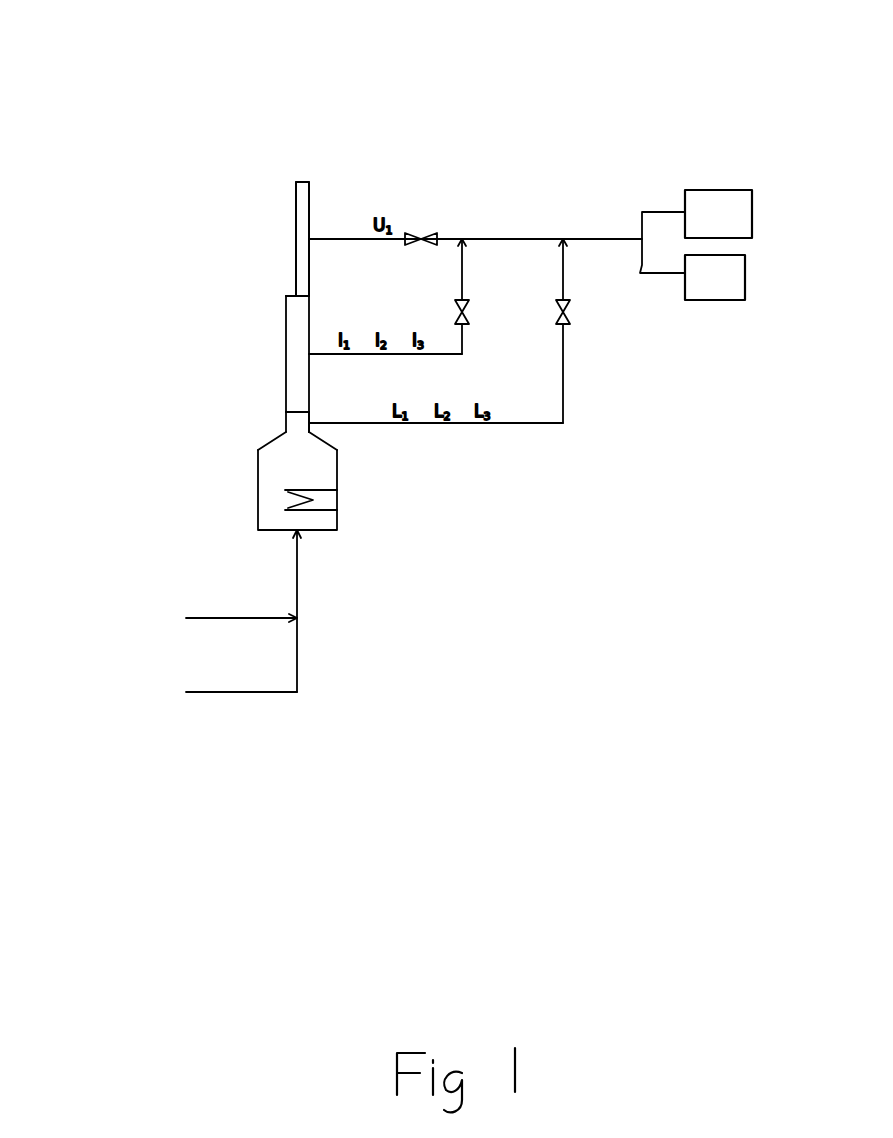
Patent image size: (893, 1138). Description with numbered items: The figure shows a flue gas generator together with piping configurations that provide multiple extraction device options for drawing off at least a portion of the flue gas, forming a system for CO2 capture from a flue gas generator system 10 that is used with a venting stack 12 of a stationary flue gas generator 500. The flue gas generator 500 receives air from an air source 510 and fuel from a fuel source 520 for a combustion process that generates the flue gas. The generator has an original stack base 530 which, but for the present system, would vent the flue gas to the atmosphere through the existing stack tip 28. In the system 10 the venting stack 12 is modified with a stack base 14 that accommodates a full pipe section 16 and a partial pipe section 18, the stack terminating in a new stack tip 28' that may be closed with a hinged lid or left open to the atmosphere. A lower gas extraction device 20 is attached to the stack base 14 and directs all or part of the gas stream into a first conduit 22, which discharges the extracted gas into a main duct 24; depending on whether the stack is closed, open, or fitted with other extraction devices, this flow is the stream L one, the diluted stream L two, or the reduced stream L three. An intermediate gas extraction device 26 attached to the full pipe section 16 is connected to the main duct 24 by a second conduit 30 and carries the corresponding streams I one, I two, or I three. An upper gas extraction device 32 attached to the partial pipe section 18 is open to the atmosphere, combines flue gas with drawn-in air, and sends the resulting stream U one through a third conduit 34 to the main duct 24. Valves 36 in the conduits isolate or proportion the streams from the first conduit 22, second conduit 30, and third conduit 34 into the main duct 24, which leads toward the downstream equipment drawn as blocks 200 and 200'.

The flue gas generator system 10 is at (460, 68).
The venting stack 12 is at (251, 376).
The stack base 14 is at (315, 412).
The full pipe section 16 is at (302, 318).
The partial pipe section 18 is at (293, 240).
The lower gas extraction device 20 is at (318, 428).
The first conduit 22 is at (515, 427).
The main duct 24 is at (520, 230).
The intermediate gas extraction device 26 is at (310, 360).
The stack tip 28 is at (273, 400).
The new stack tip 28' is at (256, 280).
The second conduit 30 is at (472, 277).
The upper gas extraction device 32 is at (313, 234).
The third conduit 34 is at (341, 238).
The valves 36 is at (417, 231).
The controller 200 is at (718, 214).
The second controller 200' is at (715, 277).
The flue gas generator 500 is at (247, 502).
The air source 510 is at (198, 634).
The fuel source 520 is at (195, 703).
The original stack base 530 is at (278, 432).